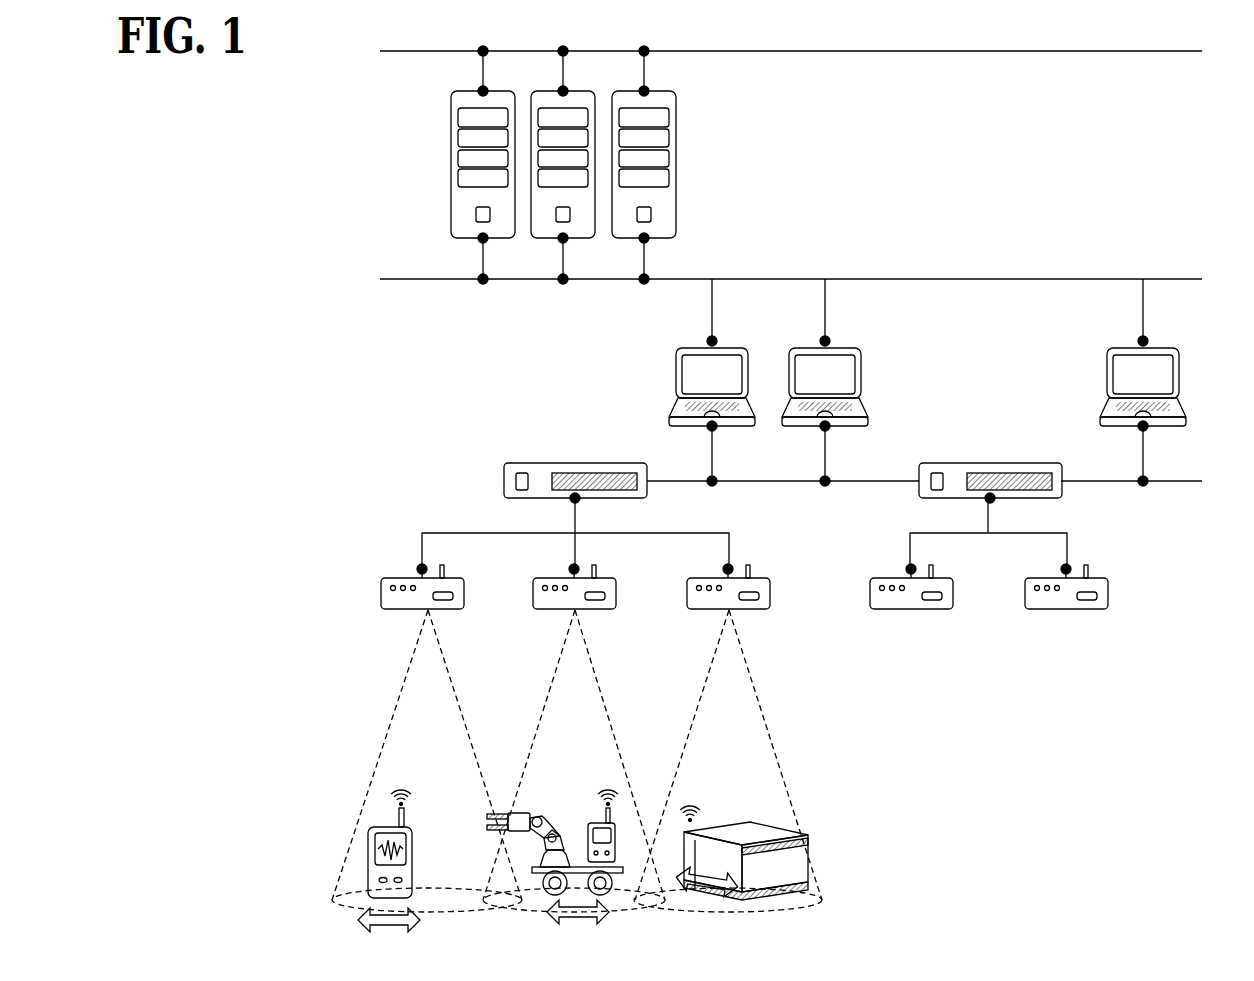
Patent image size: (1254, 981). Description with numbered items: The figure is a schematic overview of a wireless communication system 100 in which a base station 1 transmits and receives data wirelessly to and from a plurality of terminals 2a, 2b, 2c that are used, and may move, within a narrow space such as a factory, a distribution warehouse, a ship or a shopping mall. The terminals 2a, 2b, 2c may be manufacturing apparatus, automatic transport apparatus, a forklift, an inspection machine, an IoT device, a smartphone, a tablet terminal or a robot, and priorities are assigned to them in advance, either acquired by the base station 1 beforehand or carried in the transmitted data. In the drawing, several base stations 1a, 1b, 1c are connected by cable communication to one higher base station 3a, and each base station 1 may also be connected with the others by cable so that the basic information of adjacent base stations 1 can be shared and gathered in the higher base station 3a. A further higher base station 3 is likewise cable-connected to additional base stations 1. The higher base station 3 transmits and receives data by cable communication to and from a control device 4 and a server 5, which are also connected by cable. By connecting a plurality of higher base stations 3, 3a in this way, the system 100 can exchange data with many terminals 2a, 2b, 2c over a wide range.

The wireless communication system 100 is at (226, 576).
The server 5 is at (452, 110).
The control device 4 is at (677, 370).
The higher base station 3 is at (962, 471).
The higher base station 3a is at (541, 470).
The base station 1 is at (875, 579).
The base station 1a is at (387, 582).
The base station 1b is at (538, 581).
The base station 1c is at (785, 555).
The terminal 2a is at (367, 833).
The terminal 2b is at (542, 812).
The terminal 2c is at (700, 823).